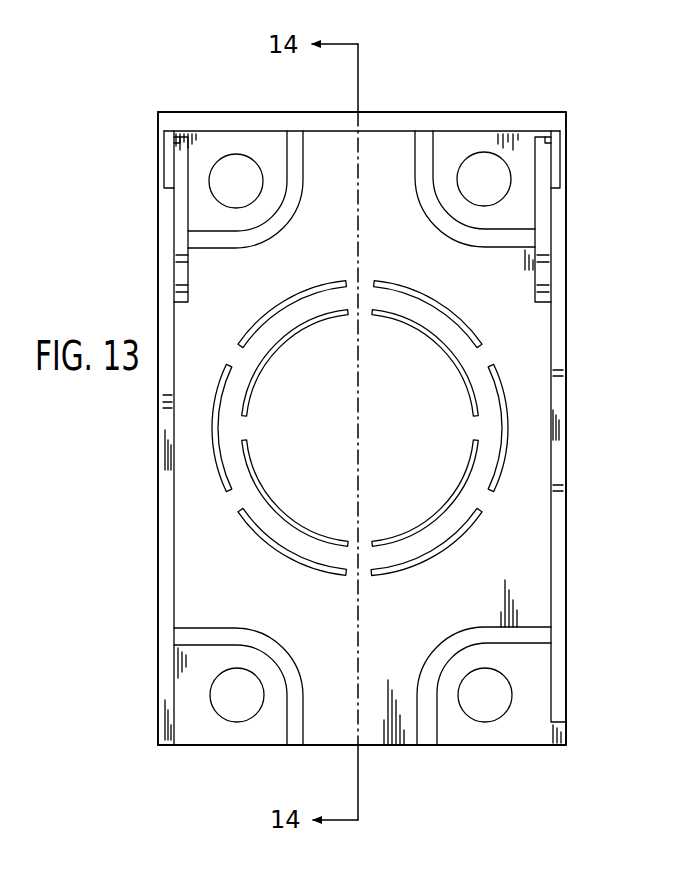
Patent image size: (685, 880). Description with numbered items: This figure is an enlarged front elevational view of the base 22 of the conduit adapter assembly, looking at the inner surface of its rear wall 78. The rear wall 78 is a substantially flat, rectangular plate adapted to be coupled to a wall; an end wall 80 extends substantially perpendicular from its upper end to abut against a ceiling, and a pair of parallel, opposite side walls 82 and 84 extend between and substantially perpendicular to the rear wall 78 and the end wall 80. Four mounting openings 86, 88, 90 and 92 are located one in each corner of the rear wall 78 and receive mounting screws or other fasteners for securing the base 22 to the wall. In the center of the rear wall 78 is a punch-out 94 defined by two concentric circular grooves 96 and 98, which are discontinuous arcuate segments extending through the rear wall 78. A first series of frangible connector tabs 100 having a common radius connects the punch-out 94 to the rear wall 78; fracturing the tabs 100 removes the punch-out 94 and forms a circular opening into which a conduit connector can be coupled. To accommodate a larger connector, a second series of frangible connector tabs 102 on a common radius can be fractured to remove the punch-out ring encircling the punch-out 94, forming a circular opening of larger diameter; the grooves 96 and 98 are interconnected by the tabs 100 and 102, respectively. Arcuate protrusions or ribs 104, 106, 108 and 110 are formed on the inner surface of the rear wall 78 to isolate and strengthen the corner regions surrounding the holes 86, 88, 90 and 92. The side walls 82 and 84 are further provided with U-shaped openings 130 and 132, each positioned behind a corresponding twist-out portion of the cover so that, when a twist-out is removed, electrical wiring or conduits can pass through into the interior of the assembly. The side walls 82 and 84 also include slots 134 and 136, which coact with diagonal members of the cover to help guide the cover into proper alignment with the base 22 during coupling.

The base 22 is at (153, 245).
The rear wall 78 is at (388, 745).
The end wall 80 is at (462, 112).
The side wall 82 is at (158, 572).
The side wall 84 is at (567, 568).
The mounting opening 86 is at (236, 702).
The mounting opening 88 is at (486, 712).
The mounting opening 90 is at (228, 178).
The mounting opening 92 is at (492, 166).
The punch-out 94 is at (356, 444).
The circular groove 96 is at (270, 355).
The circular groove 98 is at (290, 565).
The frangible connector tabs 100 is at (243, 425).
The frangible connector tabs 102 is at (497, 352).
The arcuate rib 104 is at (292, 650).
The arcuate rib 106 is at (425, 648).
The arcuate rib 108 is at (292, 218).
The arcuate rib 110 is at (440, 233).
The U-shaped opening 130 is at (188, 270).
The U-shaped opening 132 is at (535, 288).
The slot 134 is at (162, 150).
The slot 136 is at (566, 142).